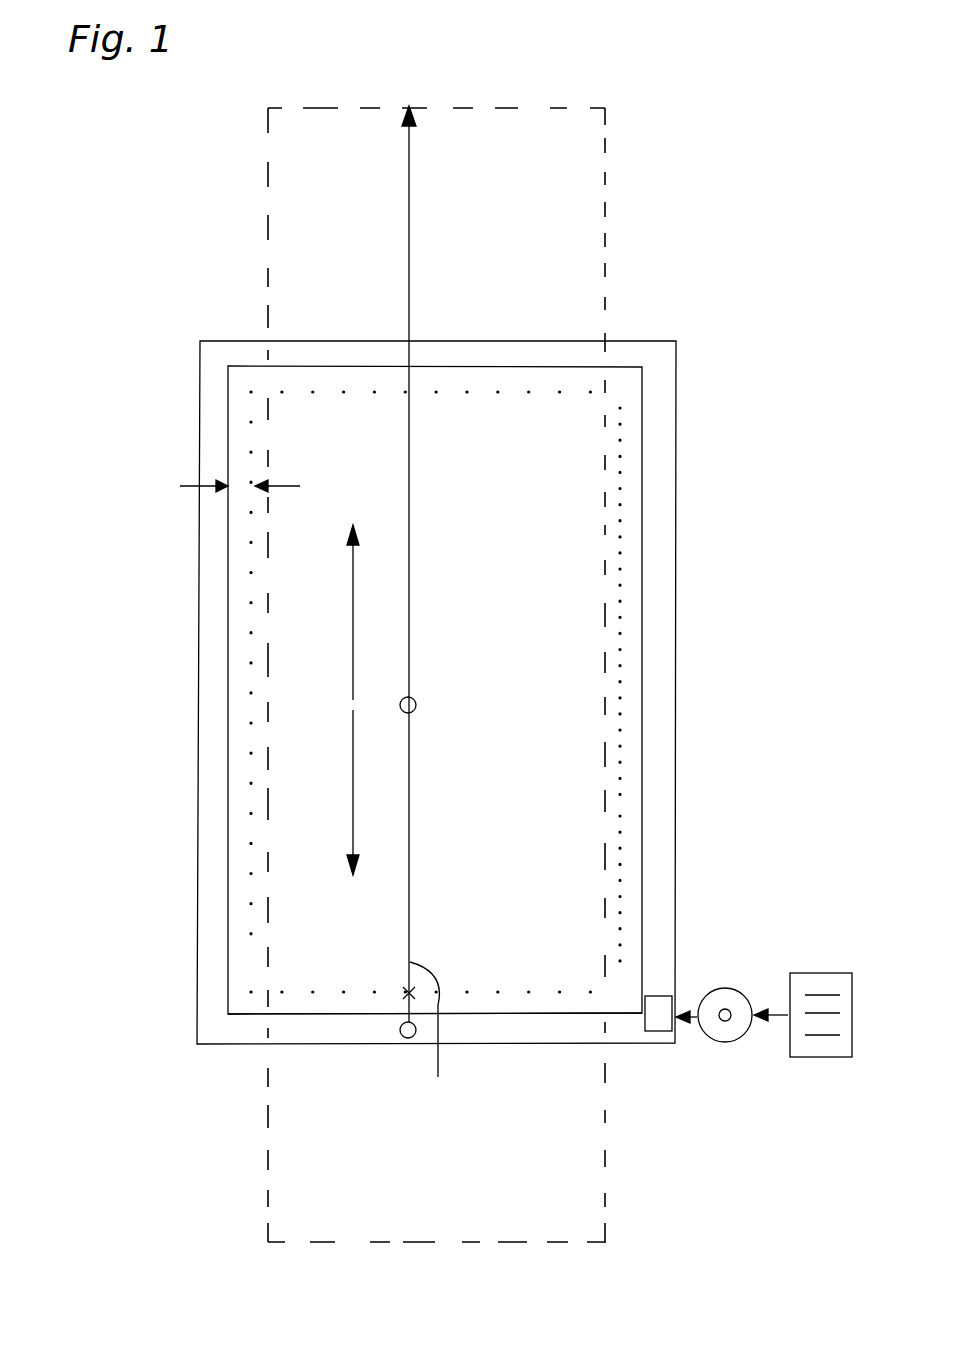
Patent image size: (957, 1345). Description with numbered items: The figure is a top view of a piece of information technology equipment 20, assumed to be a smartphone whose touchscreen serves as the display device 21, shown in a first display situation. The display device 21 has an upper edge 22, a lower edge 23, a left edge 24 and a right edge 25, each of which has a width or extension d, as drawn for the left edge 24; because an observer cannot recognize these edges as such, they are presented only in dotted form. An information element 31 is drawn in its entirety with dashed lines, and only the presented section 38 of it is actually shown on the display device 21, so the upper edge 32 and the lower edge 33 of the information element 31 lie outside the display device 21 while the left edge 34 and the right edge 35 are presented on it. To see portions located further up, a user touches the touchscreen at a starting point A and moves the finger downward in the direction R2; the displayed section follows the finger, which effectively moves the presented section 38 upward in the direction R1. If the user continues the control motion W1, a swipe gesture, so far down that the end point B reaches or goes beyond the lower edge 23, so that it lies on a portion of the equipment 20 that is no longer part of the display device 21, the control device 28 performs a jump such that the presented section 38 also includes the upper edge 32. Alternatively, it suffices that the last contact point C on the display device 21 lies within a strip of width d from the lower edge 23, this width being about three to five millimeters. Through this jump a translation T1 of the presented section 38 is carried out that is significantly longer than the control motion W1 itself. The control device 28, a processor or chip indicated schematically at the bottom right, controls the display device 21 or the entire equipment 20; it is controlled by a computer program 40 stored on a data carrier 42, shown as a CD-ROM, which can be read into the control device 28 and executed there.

The piece of information technology equipment 20 is at (655, 341).
The display device 21 is at (585, 447).
The upper edge of display device 22 is at (472, 380).
The lower edge of display device 23 is at (505, 1028).
The left edge of display device 24 is at (180, 488).
The right edge of display device 25 is at (630, 435).
The control device 28 is at (667, 1042).
The information element 31 is at (568, 183).
The upper edge of information element 32 is at (560, 113).
The lower edge of information element 33 is at (552, 1243).
The left edge of information element 34 is at (268, 795).
The right edge of information element 35 is at (603, 868).
The presented section 38 is at (532, 646).
The computer program 40 is at (822, 1057).
The data carrier 42 is at (725, 1042).
The translation T1 is at (415, 120).
The first direction R1 is at (352, 605).
The second direction R2 is at (352, 748).
The starting point of the control motion A is at (416, 700).
The end point of the control motion B is at (402, 1038).
The last contact point on the display device C is at (408, 1002).
The control motion W1 is at (447, 1042).
The width of the edge d is at (244, 482).